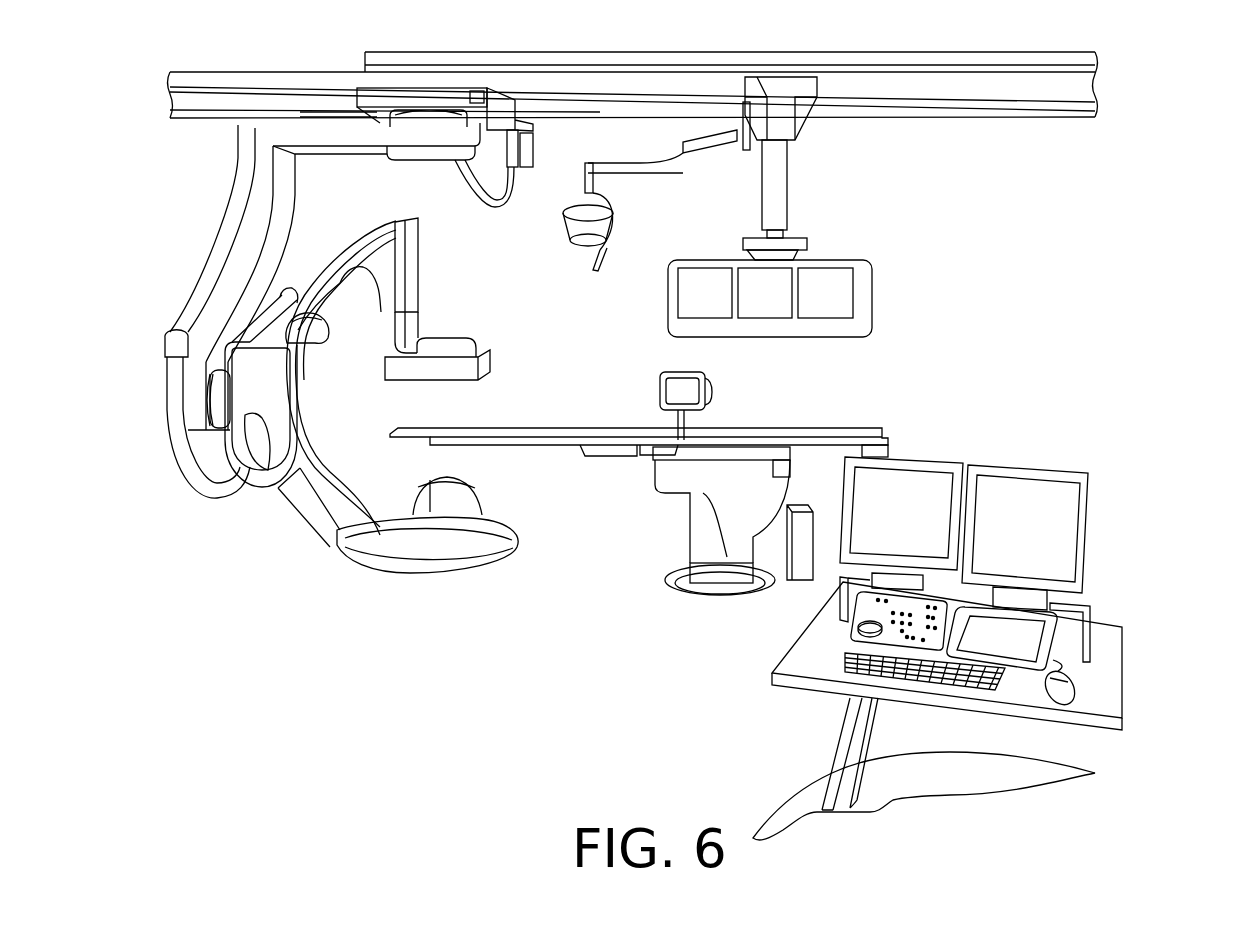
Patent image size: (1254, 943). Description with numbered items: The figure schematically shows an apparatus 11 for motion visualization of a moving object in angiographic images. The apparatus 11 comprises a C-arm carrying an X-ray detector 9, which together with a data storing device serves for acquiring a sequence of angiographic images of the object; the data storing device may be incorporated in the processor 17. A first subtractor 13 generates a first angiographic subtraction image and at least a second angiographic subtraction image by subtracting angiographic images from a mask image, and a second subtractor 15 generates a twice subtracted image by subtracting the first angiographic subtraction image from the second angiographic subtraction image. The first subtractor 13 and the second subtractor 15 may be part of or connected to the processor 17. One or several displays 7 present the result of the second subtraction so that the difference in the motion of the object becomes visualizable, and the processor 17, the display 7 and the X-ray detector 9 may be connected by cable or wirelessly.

The display 7 is at (895, 323).
The X-ray detector 9 is at (313, 565).
The apparatus 11 is at (593, 657).
The first subtractor 13 is at (813, 607).
The second subtractor 15 is at (815, 658).
The processor 17 is at (1125, 567).